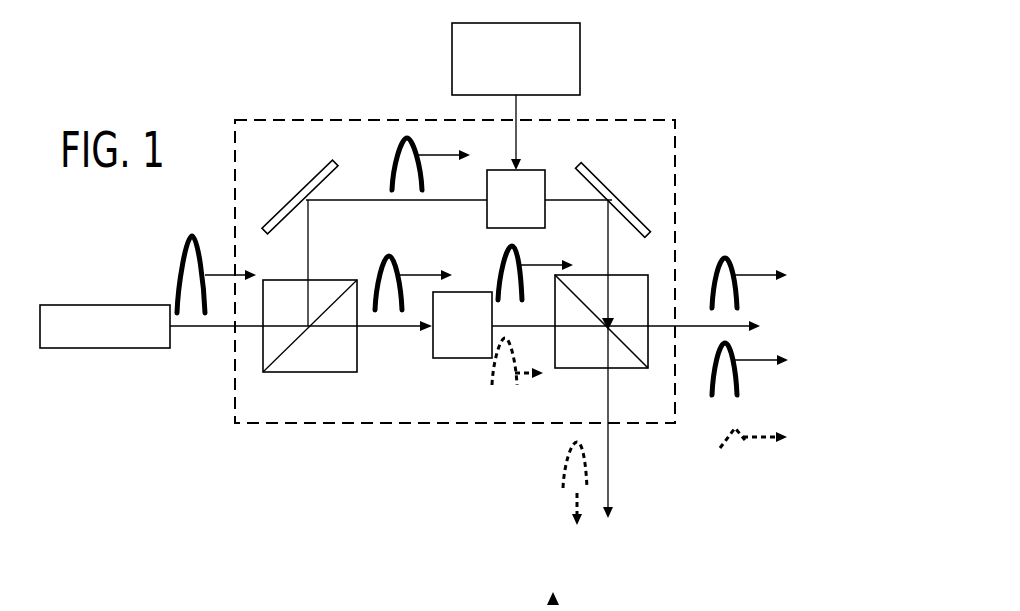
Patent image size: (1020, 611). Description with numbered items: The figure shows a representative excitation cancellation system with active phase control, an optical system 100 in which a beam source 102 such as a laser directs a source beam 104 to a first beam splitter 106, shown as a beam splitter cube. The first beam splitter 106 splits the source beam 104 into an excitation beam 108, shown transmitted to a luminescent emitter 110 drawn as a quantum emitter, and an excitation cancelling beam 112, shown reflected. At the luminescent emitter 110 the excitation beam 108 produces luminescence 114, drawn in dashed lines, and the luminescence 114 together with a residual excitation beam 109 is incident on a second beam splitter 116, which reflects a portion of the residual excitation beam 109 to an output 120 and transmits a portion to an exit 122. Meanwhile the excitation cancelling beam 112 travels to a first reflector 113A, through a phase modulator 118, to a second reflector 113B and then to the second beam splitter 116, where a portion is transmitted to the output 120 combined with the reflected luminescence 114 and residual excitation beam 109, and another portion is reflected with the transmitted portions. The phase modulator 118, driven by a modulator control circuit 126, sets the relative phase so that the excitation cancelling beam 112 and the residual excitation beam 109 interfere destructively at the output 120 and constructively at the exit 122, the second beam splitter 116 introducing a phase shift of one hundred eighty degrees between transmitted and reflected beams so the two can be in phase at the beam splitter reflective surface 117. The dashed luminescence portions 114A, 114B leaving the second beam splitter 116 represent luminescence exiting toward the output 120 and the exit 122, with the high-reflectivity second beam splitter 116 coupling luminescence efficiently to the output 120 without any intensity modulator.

The optical system 100 is at (226, 464).
The beam source 102 is at (123, 348).
The source beam 104 is at (200, 250).
The first beam splitter 106 is at (358, 372).
The excitation beam 108 is at (386, 258).
The residual excitation beam 109 is at (520, 262).
The luminescent emitter 110 is at (463, 358).
The excitation cancelling beam 112 is at (400, 148).
The first reflector 113A is at (282, 208).
The second reflector 113B is at (653, 163).
The luminescence 114 is at (510, 378).
The emitted photon pulse 114A is at (563, 462).
The emitted photon pulse 114B is at (745, 440).
The second beam splitter 116 is at (646, 368).
The beam splitter reflective surface 117 is at (580, 302).
The phase modulator 118 is at (487, 216).
The output 120 is at (608, 430).
The exit 122 is at (693, 325).
The modulator control circuit 126 is at (582, 62).